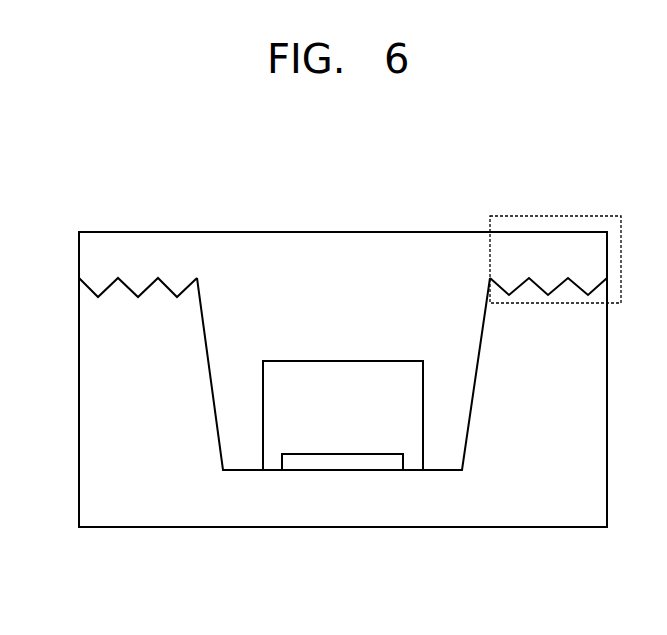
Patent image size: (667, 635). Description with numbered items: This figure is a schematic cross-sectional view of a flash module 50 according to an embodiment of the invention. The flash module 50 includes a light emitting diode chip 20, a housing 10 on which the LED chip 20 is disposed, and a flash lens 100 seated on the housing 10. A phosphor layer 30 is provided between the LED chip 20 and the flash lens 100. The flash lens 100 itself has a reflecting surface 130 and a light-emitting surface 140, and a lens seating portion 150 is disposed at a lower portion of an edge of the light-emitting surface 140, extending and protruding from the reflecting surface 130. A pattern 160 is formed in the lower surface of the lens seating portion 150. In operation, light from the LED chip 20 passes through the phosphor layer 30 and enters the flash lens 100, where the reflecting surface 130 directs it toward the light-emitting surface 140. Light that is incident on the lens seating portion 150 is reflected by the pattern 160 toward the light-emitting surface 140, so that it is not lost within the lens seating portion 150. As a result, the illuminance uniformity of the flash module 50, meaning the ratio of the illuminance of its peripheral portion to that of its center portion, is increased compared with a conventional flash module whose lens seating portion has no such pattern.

The housing 10 is at (416, 507).
The light emitting diode (LED) chip 20 is at (339, 462).
The phosphor layer 30 is at (405, 410).
The flash module 50 is at (610, 185).
The flash lens 100 is at (315, 258).
The reflecting surface 130 is at (209, 376).
The light-emitting surface 140 is at (421, 232).
The lens seating portion 150 is at (553, 216).
The pattern 160 is at (80, 290).